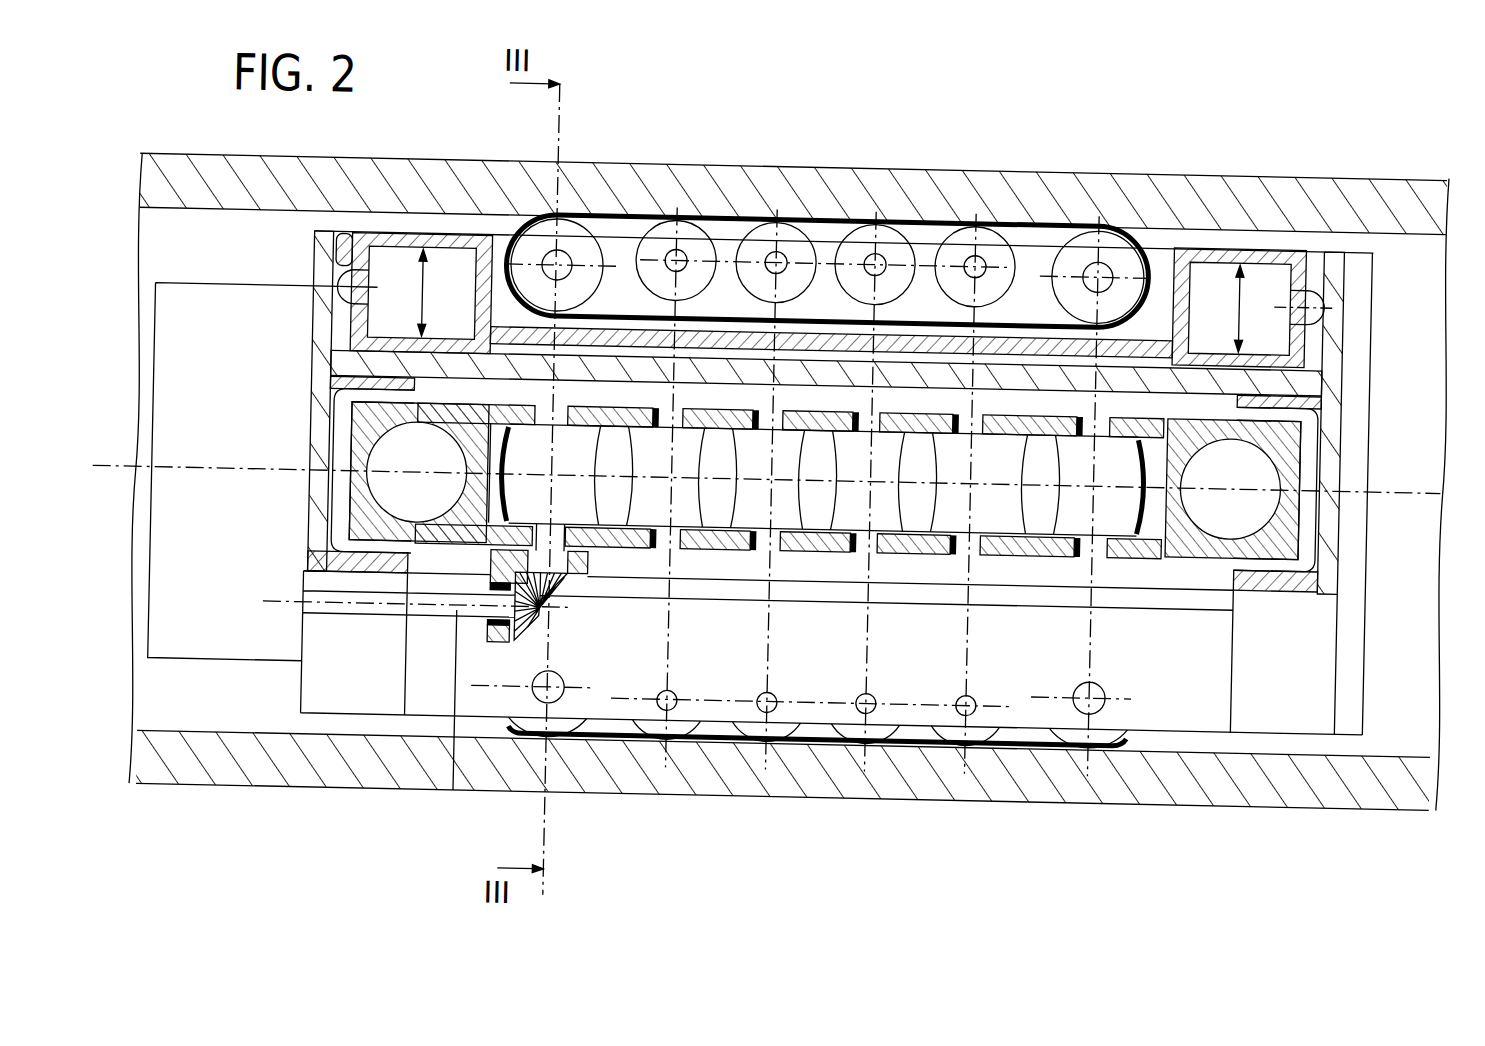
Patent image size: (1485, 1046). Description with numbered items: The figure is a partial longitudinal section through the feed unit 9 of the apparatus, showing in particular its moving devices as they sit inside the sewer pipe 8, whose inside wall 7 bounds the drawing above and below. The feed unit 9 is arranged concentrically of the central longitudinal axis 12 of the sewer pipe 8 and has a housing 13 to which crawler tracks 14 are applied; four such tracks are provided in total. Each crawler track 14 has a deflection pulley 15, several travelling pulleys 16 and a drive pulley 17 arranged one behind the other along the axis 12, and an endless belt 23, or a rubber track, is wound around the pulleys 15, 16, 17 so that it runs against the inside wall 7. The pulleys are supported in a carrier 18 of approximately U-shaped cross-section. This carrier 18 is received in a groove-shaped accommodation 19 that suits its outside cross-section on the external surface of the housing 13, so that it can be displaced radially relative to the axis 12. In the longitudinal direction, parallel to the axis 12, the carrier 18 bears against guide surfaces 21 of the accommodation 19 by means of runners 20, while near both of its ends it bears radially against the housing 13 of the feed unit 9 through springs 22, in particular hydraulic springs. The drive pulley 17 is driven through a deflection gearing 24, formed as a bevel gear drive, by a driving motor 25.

The inside wall 7 is at (236, 731).
The sewer pipe 8 is at (250, 782).
The feed unit 9 is at (1183, 226).
The central longitudinal axis 12 is at (232, 475).
The housing 13 is at (326, 332).
The crawler track 14 is at (830, 206).
The deflection pulley 15 is at (1110, 233).
The travelling pulley 16 is at (689, 227).
The drive pulley 17 is at (572, 237).
The carrier 18 is at (1257, 243).
The groove-shaped accommodation 19 is at (342, 249).
The runner 20 is at (337, 283).
The guide surface 21 is at (318, 312).
The spring 22 is at (447, 272).
The endless belt 23 is at (1036, 313).
The deflection gearing 24 is at (549, 693).
The driving motor 25 is at (217, 651).